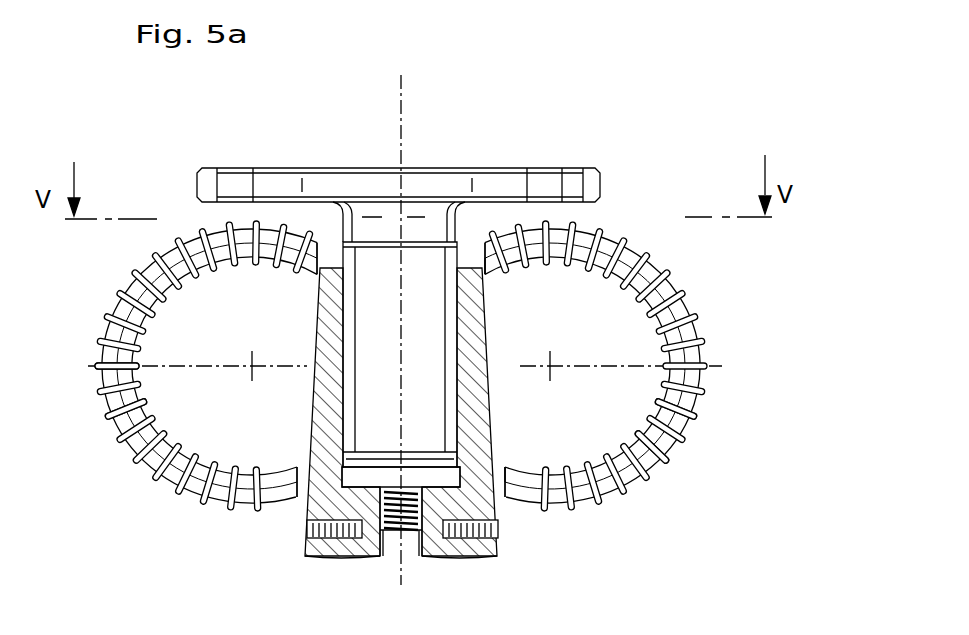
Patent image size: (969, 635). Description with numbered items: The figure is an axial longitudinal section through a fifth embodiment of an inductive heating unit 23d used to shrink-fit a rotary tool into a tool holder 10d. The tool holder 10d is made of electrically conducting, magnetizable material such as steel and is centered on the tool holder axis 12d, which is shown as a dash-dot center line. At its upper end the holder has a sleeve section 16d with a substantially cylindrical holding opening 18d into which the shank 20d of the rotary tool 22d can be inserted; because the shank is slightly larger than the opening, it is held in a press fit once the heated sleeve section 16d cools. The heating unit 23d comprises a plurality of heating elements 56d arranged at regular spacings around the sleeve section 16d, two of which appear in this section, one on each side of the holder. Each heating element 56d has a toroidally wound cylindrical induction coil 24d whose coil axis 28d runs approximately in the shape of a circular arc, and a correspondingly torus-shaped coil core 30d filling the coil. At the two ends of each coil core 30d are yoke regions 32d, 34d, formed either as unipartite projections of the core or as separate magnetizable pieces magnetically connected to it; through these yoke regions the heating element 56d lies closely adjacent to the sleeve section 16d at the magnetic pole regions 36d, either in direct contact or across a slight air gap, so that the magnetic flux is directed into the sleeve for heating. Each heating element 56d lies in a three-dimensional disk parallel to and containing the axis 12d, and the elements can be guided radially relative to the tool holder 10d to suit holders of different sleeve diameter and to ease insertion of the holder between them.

The tool holder 10d is at (241, 544).
The tool holder axis 12d is at (403, 101).
The sleeve section 16d is at (492, 392).
The holding opening 18d is at (455, 285).
The shank 20d is at (372, 302).
The rotary tool 22d is at (270, 166).
The heating unit 23d is at (731, 409).
The induction coil 24d is at (155, 458).
The coil axis 28d is at (120, 420).
The coil core 30d is at (148, 300).
The yoke region 32d is at (283, 476).
The yoke region 34d is at (332, 258).
The magnetic pole region 36d is at (488, 266).
The heating element 56d is at (101, 354).